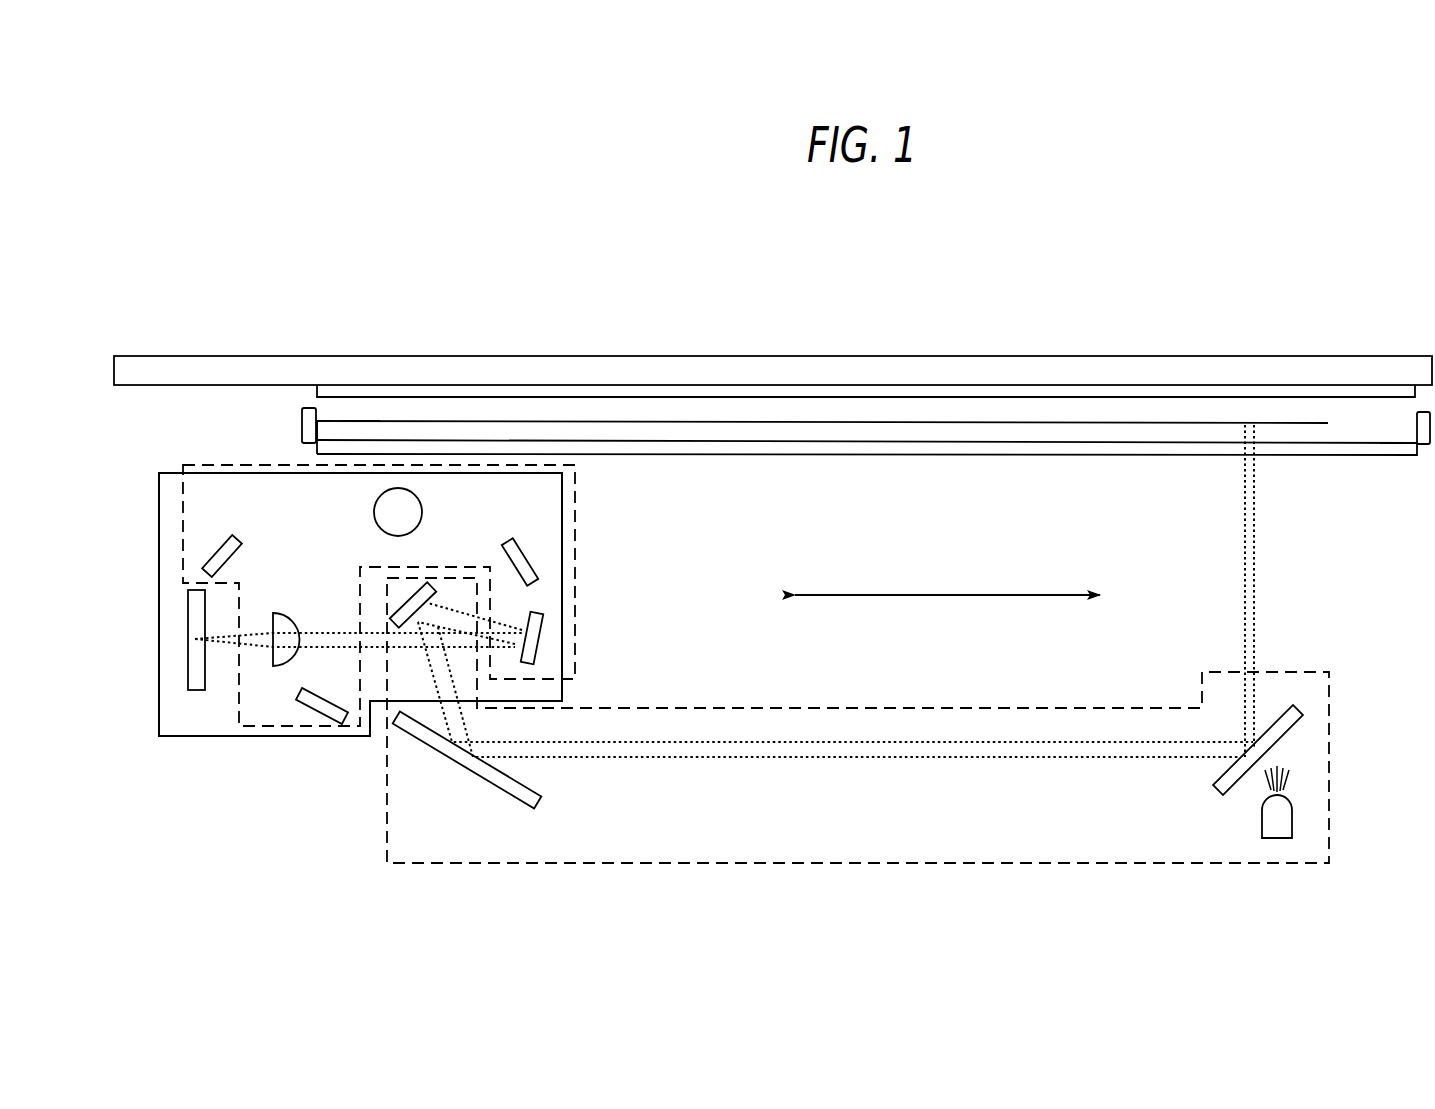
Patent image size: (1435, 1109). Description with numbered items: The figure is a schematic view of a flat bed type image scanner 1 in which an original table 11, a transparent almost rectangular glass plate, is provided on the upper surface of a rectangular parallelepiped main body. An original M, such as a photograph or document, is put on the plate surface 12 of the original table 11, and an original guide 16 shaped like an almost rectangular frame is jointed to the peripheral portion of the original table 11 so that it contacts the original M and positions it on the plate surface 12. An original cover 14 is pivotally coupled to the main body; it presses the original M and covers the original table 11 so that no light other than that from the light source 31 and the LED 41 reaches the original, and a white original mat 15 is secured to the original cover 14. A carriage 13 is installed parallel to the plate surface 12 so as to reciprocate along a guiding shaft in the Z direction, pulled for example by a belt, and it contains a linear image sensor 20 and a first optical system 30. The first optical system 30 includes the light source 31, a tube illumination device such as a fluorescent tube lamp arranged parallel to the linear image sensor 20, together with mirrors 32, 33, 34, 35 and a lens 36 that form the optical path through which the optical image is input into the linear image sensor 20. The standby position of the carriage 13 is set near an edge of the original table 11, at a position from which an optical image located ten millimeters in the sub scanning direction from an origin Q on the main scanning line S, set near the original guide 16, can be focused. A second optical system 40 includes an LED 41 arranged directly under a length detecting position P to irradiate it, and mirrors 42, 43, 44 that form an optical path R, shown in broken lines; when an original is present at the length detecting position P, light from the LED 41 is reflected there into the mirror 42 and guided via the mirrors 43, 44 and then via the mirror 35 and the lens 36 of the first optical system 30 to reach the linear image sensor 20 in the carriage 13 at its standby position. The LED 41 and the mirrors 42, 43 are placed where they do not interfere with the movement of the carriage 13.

The image scanner 1 is at (766, 326).
The original table 11 is at (1046, 455).
The plate surface 12 is at (1388, 439).
The carriage 13 is at (563, 593).
The original cover 14 is at (1130, 357).
The original mat 15 is at (888, 395).
The original guide 16 is at (305, 408).
The linear image sensor 20 is at (196, 692).
The first optical system 30 is at (218, 467).
The light source 31 is at (421, 503).
The mirror 32 is at (318, 721).
The mirror 33 is at (527, 553).
The mirror 34 is at (237, 543).
The mirror 35 is at (541, 650).
The lens 36 is at (298, 616).
The second optical system 40 is at (738, 708).
The LED 41 is at (1277, 838).
The mirror 42 is at (1300, 712).
The mirror 43 is at (463, 768).
The mirror 44 is at (428, 587).
The original M is at (1000, 421).
The length detecting position P is at (1256, 431).
The origin Q is at (322, 411).
The optical path R is at (1257, 618).
The main scanning line S is at (355, 418).
The Z direction Z is at (947, 595).